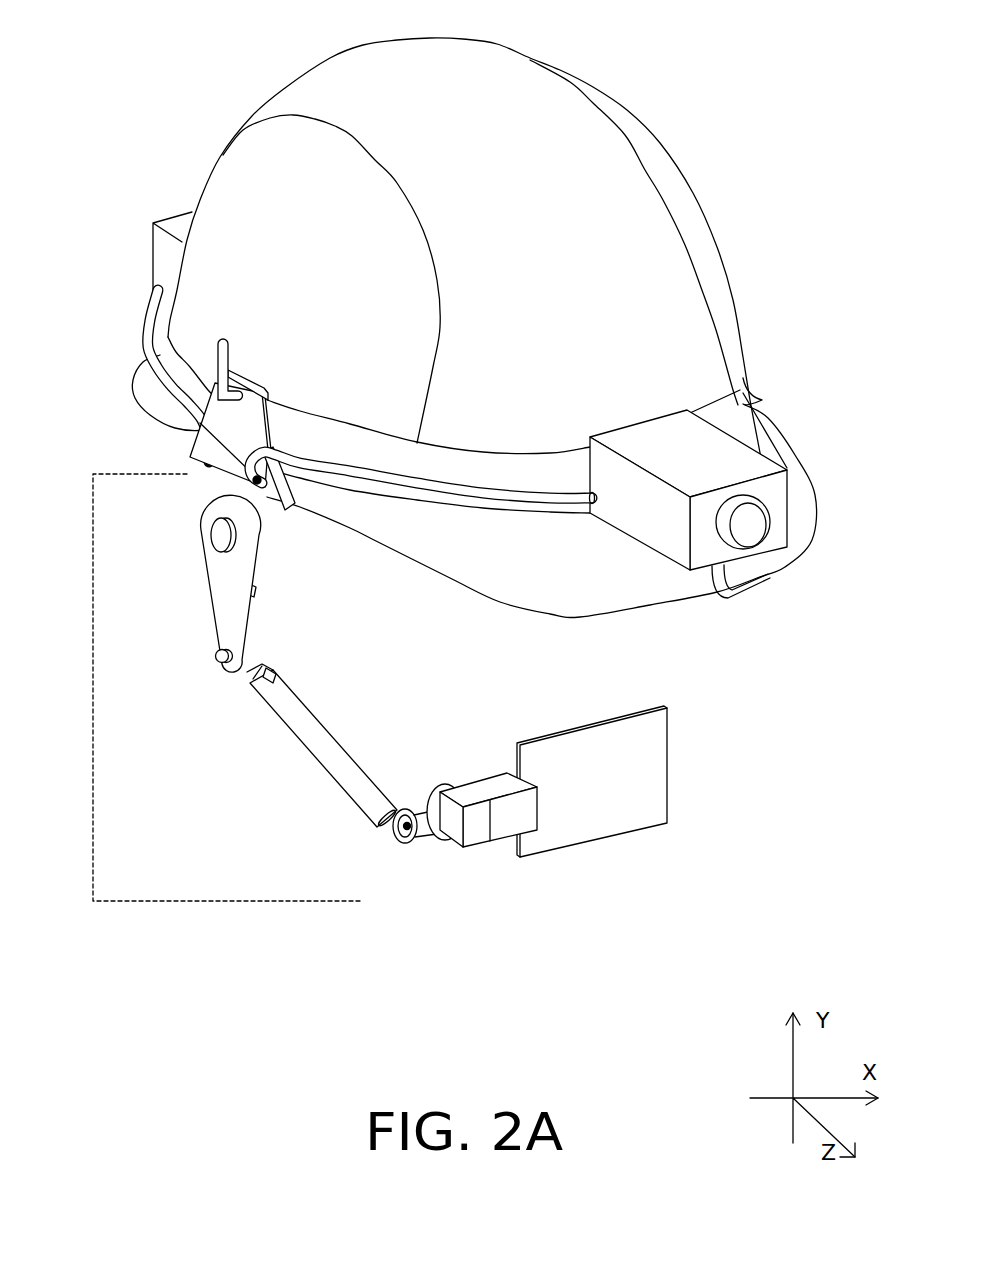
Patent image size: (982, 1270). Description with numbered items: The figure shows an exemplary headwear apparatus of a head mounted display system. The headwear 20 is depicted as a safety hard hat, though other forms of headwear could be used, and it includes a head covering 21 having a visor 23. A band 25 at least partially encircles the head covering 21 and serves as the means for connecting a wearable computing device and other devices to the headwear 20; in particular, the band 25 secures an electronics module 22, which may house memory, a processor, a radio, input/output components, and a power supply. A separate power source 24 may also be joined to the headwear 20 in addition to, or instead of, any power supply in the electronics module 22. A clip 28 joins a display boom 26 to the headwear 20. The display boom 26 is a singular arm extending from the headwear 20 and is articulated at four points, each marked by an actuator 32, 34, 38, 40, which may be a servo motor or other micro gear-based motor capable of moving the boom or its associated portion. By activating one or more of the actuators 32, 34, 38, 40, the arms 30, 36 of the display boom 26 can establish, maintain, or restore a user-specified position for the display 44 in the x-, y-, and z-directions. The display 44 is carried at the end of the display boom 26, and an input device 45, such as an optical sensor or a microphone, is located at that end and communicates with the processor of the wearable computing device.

The headwear 20 is at (646, 76).
The head covering 21 is at (693, 208).
The electronics module 22 is at (768, 468).
The visor 23 is at (803, 518).
The power source 24 is at (155, 238).
The band 25 is at (745, 408).
The display boom 26 is at (93, 690).
The clip 28 is at (223, 419).
The arm 30 is at (205, 522).
The actuator 32 is at (222, 538).
The actuator 34 is at (218, 655).
The arm 36 is at (288, 723).
The actuator 38 is at (400, 832).
The actuator 40 is at (449, 838).
The display 44 is at (663, 727).
The input device 45 is at (433, 792).